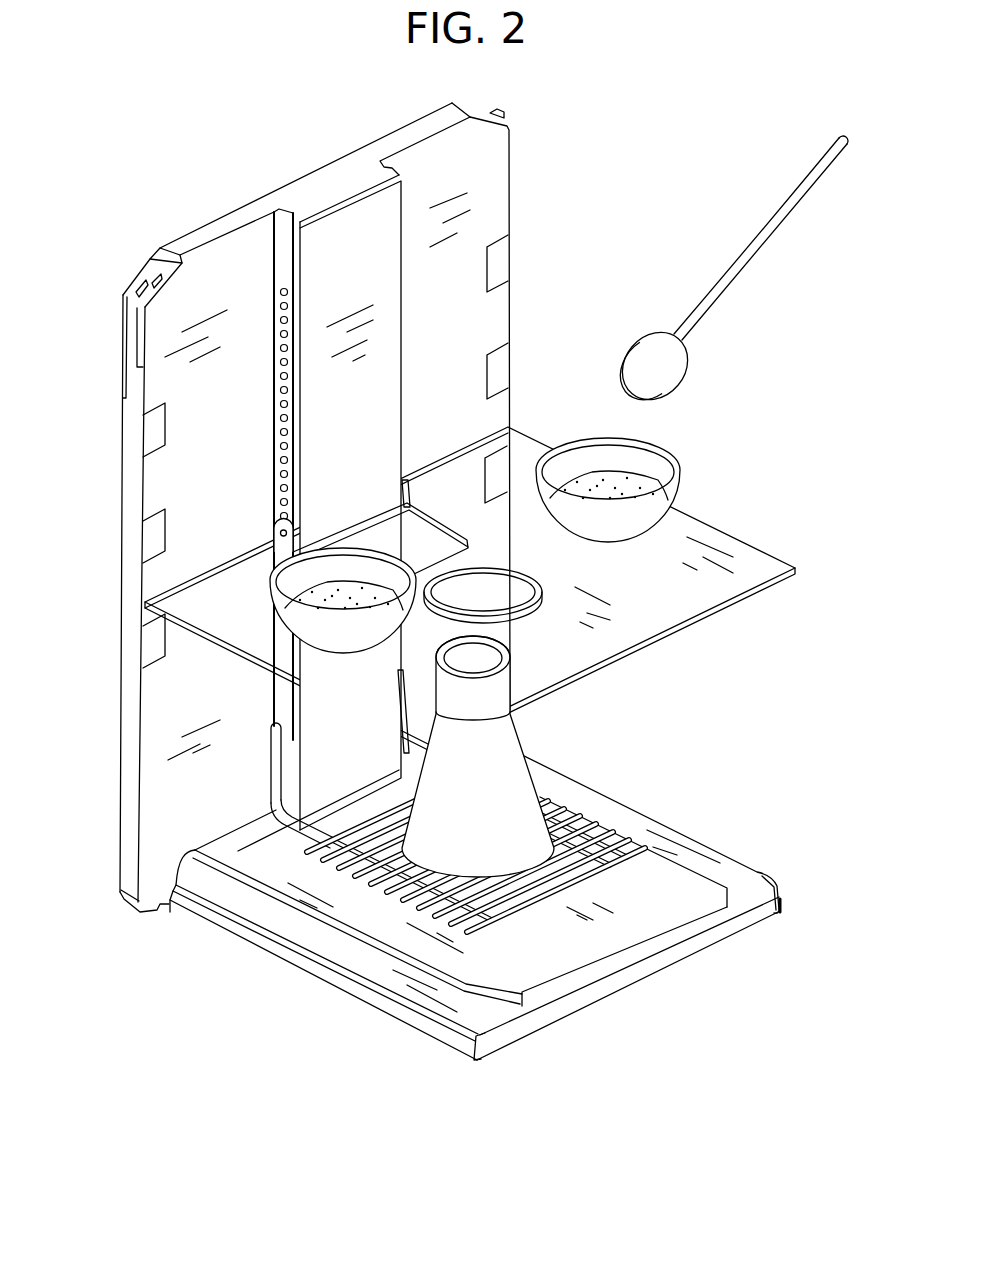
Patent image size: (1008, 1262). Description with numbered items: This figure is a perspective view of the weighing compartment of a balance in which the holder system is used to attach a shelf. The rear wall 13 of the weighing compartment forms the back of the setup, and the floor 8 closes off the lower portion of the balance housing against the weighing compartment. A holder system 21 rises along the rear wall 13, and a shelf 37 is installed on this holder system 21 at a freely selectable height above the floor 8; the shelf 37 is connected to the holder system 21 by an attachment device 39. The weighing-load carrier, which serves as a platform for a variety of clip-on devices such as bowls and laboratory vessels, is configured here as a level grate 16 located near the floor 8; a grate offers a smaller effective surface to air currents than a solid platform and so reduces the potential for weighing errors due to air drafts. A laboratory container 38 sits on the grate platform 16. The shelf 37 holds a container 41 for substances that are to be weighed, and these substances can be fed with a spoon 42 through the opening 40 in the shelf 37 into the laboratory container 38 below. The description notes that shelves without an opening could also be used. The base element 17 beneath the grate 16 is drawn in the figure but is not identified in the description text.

The clip 8 is at (770, 905).
The back panel 13 is at (474, 174).
The grid rack 16 is at (616, 822).
The base tray 17 is at (557, 964).
The vertical column 21 is at (367, 426).
The shelf plate 37 is at (740, 573).
The flask 38 is at (496, 809).
The slider bracket 39 is at (267, 534).
The support ring 40 is at (482, 604).
The bowl 41 is at (647, 463).
The spoon 42 is at (717, 290).